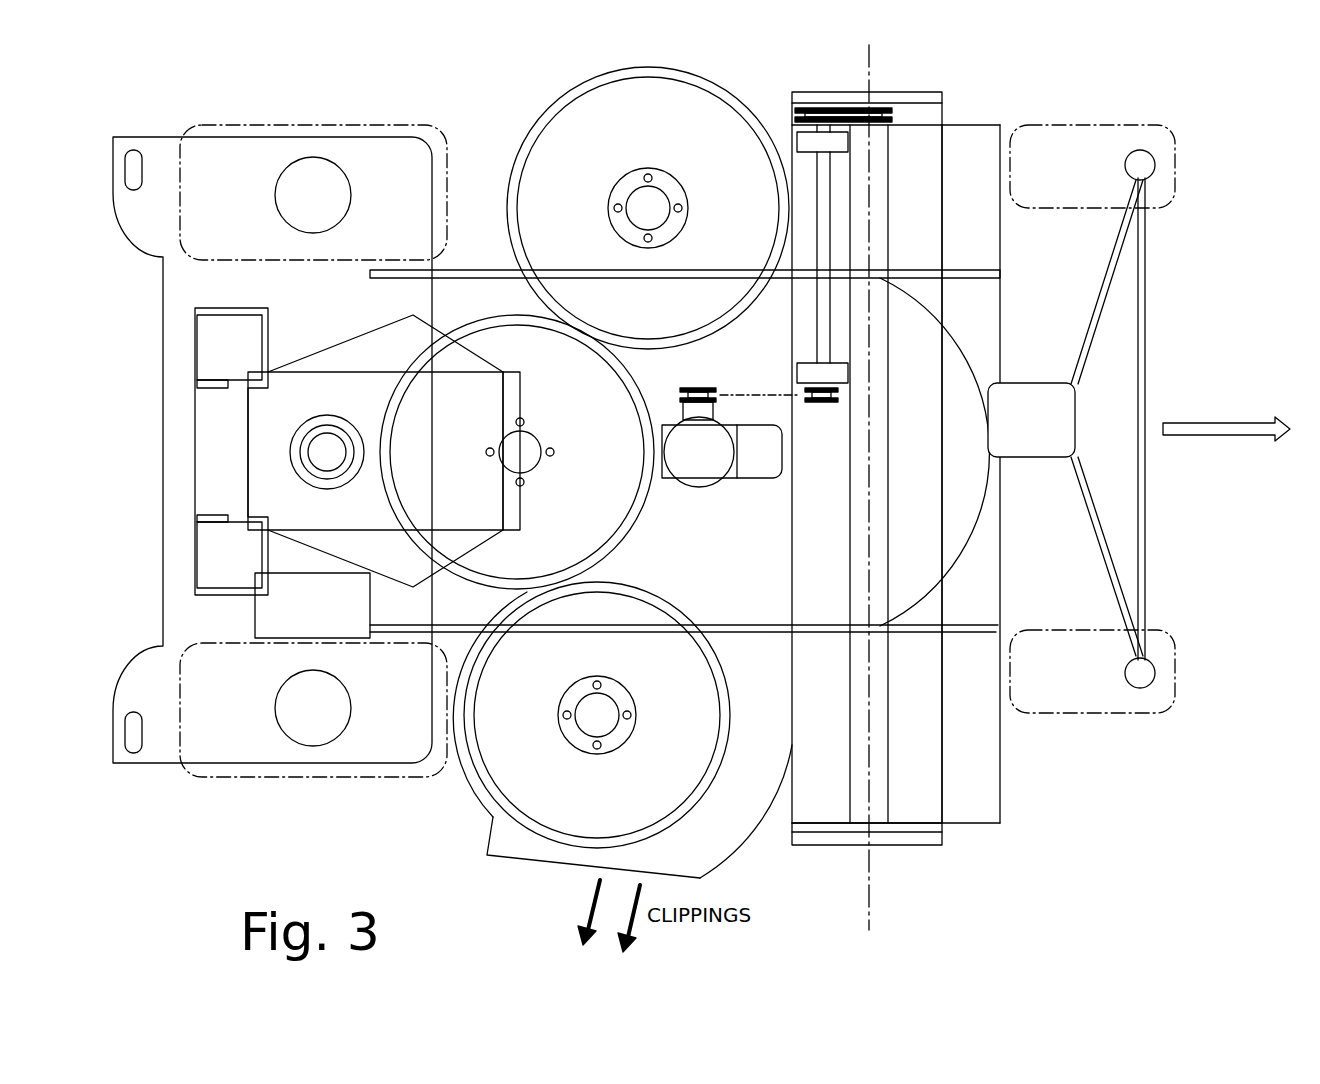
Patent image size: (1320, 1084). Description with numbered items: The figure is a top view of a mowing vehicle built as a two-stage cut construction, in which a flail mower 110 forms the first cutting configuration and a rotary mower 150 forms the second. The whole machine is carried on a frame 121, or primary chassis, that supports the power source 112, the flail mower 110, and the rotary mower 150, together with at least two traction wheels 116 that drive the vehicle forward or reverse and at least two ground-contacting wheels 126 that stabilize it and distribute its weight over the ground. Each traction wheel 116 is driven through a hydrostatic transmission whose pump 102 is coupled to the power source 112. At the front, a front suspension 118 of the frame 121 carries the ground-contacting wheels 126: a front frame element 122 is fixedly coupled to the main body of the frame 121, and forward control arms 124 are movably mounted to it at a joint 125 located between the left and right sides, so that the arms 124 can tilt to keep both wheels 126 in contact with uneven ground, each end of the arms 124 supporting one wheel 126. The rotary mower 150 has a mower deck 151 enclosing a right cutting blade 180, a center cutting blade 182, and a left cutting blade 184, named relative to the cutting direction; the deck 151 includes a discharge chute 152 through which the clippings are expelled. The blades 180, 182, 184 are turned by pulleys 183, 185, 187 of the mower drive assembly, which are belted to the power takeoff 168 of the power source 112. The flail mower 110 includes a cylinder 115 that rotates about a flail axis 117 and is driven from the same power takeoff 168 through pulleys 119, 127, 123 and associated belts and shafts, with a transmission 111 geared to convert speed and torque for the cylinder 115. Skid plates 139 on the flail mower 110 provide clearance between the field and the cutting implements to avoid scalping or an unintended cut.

The pump 102 is at (238, 513).
The flail mower 110 is at (838, 846).
The transmission 111 is at (735, 478).
The power source 112 is at (323, 352).
The cylinder 115 is at (944, 747).
The traction wheels 116 is at (248, 125).
The flail axis 117 is at (872, 900).
The front suspension 118 is at (1161, 391).
The pulley 119 is at (695, 387).
The frame 121 is at (483, 270).
The front frame element 122 is at (1047, 548).
The pulley 123 is at (886, 108).
The forward control arms 124 is at (1147, 265).
The joint 125 is at (1026, 377).
The ground-contacting wheels 126 is at (1087, 125).
The pulley 127 is at (819, 406).
The skid plates 139 is at (792, 100).
The rotary mower 150 is at (495, 828).
The mower deck 151 is at (748, 838).
The discharge chute 152 is at (556, 865).
The power takeoff 168 is at (312, 468).
The right cutting blade 180 is at (728, 740).
The center cutting blade 182 is at (642, 503).
The pulley 183 is at (570, 744).
The left cutting blade 184 is at (677, 342).
The pulley 185 is at (540, 440).
The pulley 187 is at (628, 182).